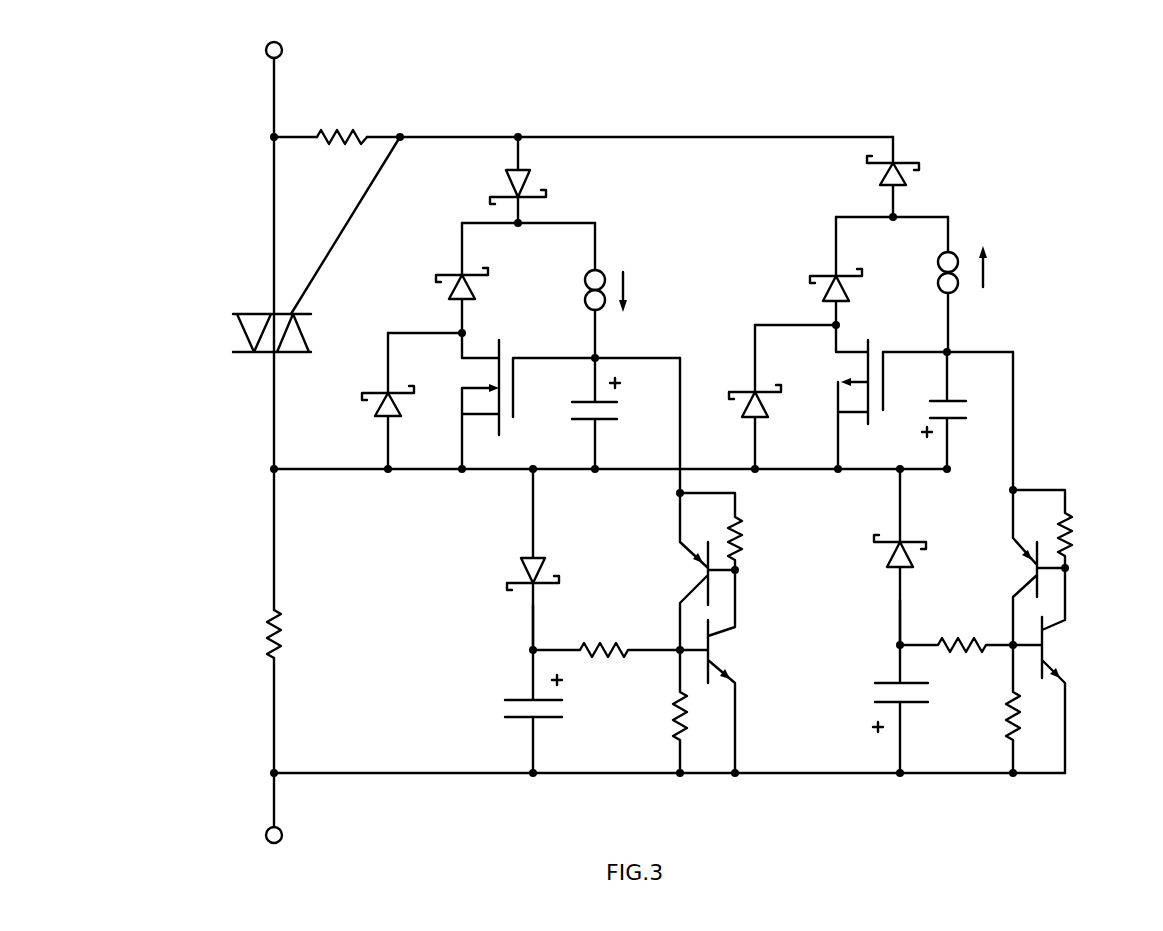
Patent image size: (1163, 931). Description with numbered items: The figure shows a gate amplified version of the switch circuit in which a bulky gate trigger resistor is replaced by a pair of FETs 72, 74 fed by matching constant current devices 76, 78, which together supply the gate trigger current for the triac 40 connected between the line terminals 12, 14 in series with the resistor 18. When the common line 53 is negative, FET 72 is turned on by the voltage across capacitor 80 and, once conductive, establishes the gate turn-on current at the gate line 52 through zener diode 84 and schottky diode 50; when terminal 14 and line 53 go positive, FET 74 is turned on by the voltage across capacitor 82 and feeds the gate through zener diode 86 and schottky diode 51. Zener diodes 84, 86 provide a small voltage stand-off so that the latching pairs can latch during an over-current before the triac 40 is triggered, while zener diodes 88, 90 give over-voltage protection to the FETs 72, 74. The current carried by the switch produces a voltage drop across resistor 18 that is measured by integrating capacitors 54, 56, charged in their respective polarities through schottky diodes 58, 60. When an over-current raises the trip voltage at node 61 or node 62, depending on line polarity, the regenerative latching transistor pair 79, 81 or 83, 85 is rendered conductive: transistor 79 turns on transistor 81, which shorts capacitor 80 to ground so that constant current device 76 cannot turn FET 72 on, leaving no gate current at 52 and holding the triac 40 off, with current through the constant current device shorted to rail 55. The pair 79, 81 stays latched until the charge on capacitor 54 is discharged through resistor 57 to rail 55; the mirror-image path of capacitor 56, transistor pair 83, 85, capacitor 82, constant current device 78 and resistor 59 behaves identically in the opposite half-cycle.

The line terminal 12 is at (266, 53).
The line terminal 14 is at (264, 835).
The resistor 18 is at (265, 628).
The triac 40 is at (236, 355).
The schottky diode 50 is at (503, 182).
The schottky diode 51 is at (910, 177).
The gate line 52 is at (463, 135).
The common line 53 is at (266, 470).
The integrating capacitor 54 is at (515, 718).
The rail 55 is at (368, 770).
The integrating capacitor 56 is at (870, 705).
The resistor 57 is at (604, 643).
The schottky diode 58 is at (520, 564).
The resistor 59 is at (960, 641).
The schottky diode 60 is at (886, 550).
The trip voltage node 61 is at (528, 650).
The trip voltage node 62 is at (895, 646).
The FET 72 is at (513, 406).
The FET 74 is at (883, 386).
The constant current device 76 is at (583, 283).
The constant current device 78 is at (936, 265).
The latching transistor 79 is at (712, 650).
The capacitor 80 is at (603, 421).
The latching transistor 81 is at (692, 590).
The capacitor 82 is at (958, 420).
The latching transistor 83 is at (1025, 578).
The zener diode 84 is at (448, 292).
The latching transistor 85 is at (1050, 630).
The zener diode 86 is at (820, 296).
The zener diode 88 is at (373, 407).
The zener diode 90 is at (768, 412).